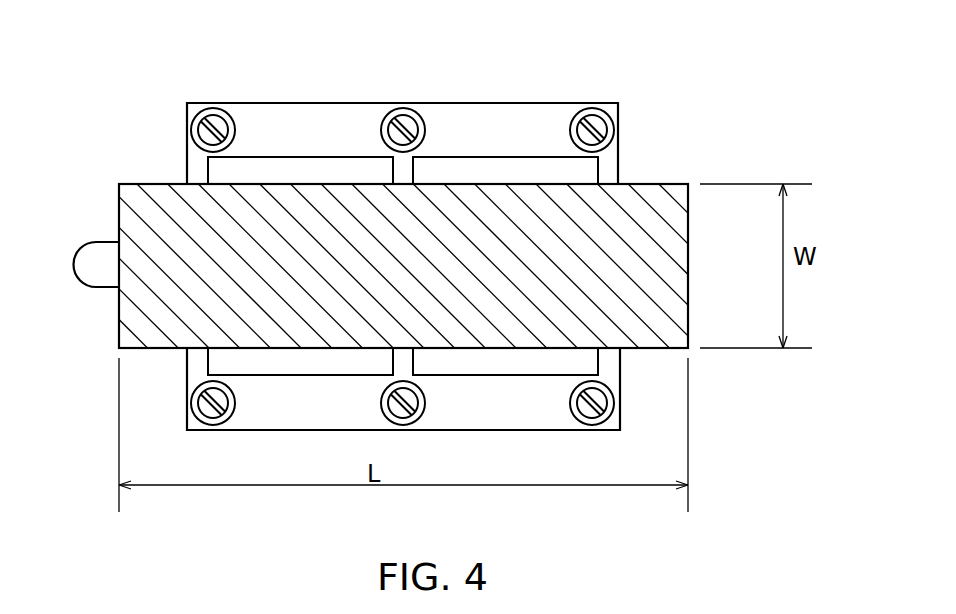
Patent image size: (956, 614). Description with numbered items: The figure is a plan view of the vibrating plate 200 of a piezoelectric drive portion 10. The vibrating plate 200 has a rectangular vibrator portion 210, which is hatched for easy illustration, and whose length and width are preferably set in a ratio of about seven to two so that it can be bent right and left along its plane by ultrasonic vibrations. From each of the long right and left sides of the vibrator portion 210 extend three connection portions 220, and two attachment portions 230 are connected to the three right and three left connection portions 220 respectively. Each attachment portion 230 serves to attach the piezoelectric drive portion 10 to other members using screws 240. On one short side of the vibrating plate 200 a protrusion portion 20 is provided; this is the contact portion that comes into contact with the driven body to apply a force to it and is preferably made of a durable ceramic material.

The piezoelectric drive portion 10 is at (715, 57).
The protrusion portion 20 is at (87, 242).
The vibrating plate 200 is at (720, 170).
The vibrator portion 210 is at (673, 259).
The connection portion 220 is at (187, 168).
The attachment portion 230 is at (530, 103).
The screw 240 is at (605, 110).